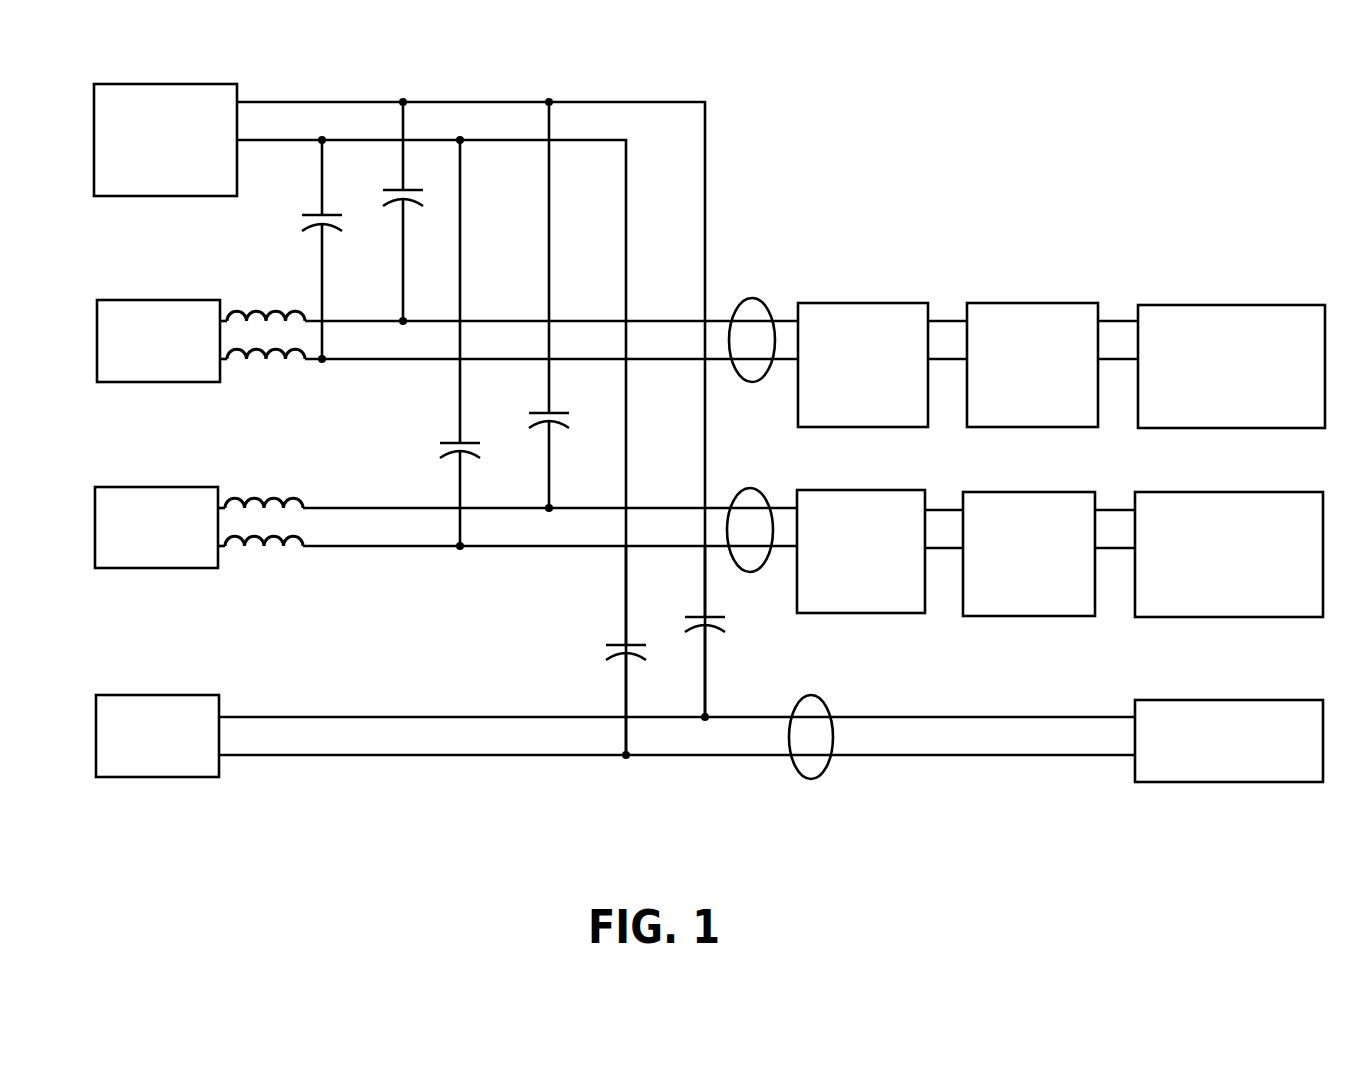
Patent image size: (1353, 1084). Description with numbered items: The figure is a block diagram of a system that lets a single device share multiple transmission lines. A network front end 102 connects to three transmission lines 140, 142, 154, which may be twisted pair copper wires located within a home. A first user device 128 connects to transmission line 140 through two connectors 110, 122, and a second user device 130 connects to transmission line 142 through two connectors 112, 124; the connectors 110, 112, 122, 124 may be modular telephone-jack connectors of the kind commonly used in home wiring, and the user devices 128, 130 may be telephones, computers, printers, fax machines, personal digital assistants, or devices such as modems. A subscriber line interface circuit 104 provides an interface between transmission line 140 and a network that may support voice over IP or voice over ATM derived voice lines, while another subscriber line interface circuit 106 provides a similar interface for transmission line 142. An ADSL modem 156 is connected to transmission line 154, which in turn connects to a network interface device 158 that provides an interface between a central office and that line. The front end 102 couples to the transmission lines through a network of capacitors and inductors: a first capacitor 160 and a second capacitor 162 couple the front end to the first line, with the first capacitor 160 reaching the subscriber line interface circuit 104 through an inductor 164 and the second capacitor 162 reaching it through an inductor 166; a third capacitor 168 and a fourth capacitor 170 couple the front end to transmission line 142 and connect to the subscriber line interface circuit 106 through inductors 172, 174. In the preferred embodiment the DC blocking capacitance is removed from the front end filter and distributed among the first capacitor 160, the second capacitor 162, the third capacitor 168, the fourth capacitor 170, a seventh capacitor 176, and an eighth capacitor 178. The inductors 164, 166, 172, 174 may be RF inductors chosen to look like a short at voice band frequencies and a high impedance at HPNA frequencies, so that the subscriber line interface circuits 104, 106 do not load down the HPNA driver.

The front end 102 is at (144, 181).
The subscriber line interface circuit 104 is at (137, 369).
The subscriber line interface circuit 106 is at (135, 556).
The connector 110 is at (841, 406).
The connector 112 is at (839, 593).
The connector 122 is at (1010, 406).
The connector 124 is at (1007, 595).
The first user device 128 is at (1209, 407).
The second user device 130 is at (1207, 595).
The transmission line 140 is at (755, 299).
The transmission line 142 is at (755, 489).
The transmission line 154 is at (815, 696).
The ADSL modem 156 is at (1208, 769).
The network interface device 158 is at (136, 764).
The capacitor C1 160 is at (384, 207).
The capacitor C2 162 is at (303, 232).
The inductor 164 is at (264, 311).
The inductor 166 is at (270, 361).
The capacitor C3 168 is at (529, 430).
The capacitor C4 170 is at (440, 459).
The inductor 172 is at (263, 498).
The inductor 174 is at (268, 548).
The capacitor C7 176 is at (686, 633).
The capacitor C8 178 is at (607, 661).